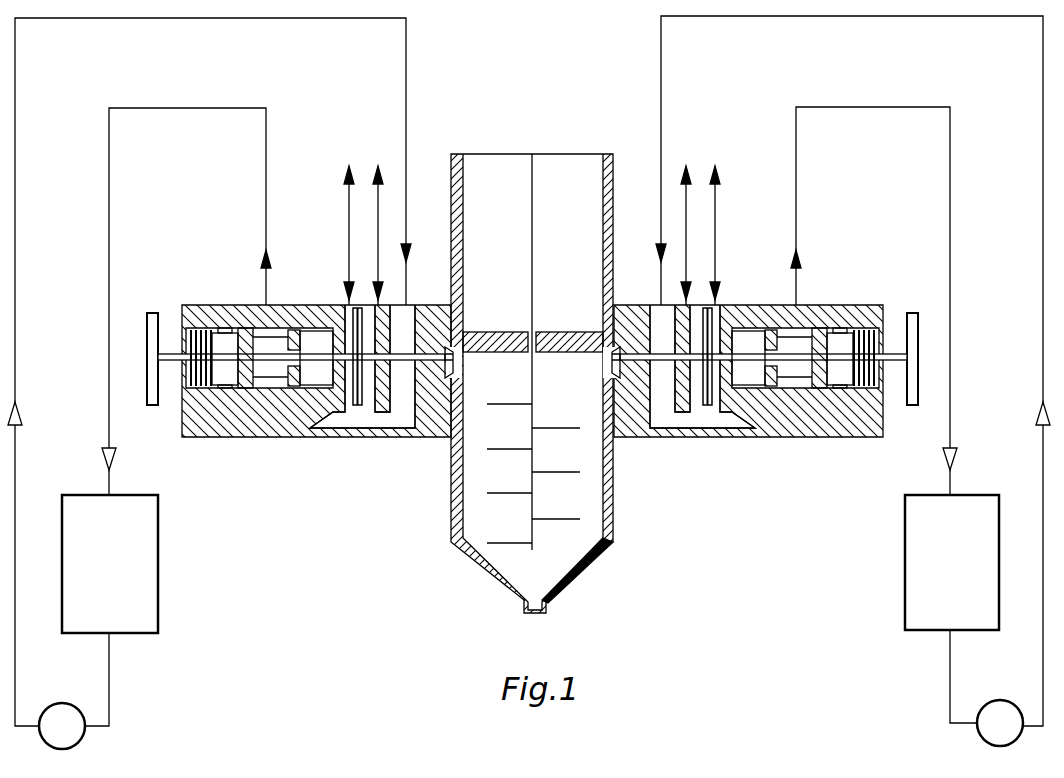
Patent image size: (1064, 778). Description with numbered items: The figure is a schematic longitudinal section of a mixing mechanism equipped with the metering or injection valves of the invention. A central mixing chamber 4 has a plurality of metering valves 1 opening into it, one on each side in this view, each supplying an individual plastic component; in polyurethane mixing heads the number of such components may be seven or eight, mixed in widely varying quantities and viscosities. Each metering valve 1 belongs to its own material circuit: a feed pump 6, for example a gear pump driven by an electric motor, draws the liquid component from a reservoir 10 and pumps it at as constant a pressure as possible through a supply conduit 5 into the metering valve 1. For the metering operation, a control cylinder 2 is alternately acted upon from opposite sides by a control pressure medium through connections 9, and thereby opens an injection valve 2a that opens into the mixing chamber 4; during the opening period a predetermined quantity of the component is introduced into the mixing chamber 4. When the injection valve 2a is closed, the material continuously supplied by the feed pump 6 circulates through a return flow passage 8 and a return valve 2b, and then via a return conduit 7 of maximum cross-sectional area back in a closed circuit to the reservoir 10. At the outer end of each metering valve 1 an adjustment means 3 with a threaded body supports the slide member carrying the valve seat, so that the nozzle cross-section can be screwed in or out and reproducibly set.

The metering valve 1 is at (232, 437).
The control cylinder 2 is at (362, 395).
The injection valve 2a is at (460, 357).
The return valve 2b is at (280, 350).
The adjustment means 3 is at (190, 378).
The mixing chamber 4 is at (452, 483).
The supply conduit 5 is at (406, 94).
The feed pump 6 is at (72, 735).
The return conduit 7 is at (109, 196).
The return flow passage 8 is at (330, 420).
The connections 9 is at (378, 222).
The reservoir 10 is at (150, 586).